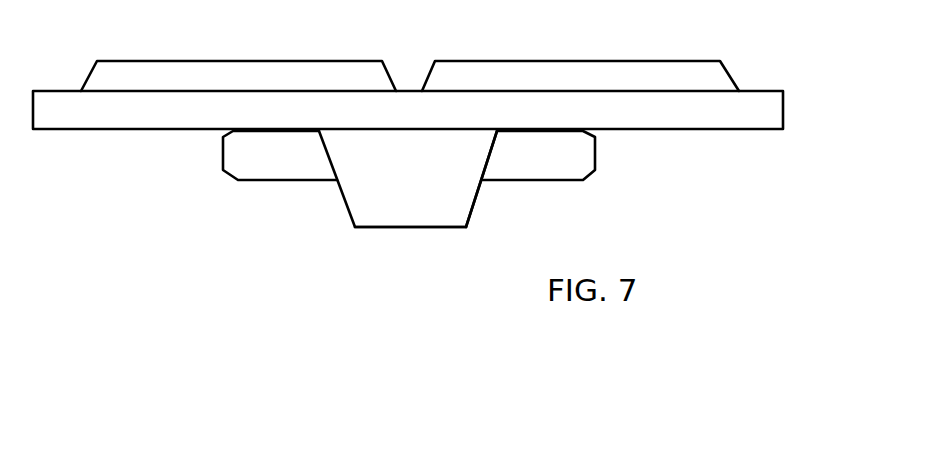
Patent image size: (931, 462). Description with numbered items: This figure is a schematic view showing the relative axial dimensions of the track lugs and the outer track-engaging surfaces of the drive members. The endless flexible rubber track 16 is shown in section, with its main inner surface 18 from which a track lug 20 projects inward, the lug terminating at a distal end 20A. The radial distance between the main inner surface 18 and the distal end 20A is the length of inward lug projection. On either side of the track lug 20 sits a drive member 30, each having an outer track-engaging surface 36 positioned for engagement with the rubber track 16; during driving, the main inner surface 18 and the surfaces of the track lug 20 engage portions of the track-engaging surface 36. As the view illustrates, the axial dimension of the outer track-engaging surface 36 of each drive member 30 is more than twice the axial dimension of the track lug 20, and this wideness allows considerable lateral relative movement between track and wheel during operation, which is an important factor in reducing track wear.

The rubber track 16 is at (595, 95).
The main inner surface 18 is at (720, 130).
The track lug 20 is at (357, 189).
The distal end of track lug 20A is at (373, 229).
The drive member 30 is at (545, 159).
The outer track-engaging surface 36 is at (508, 159).